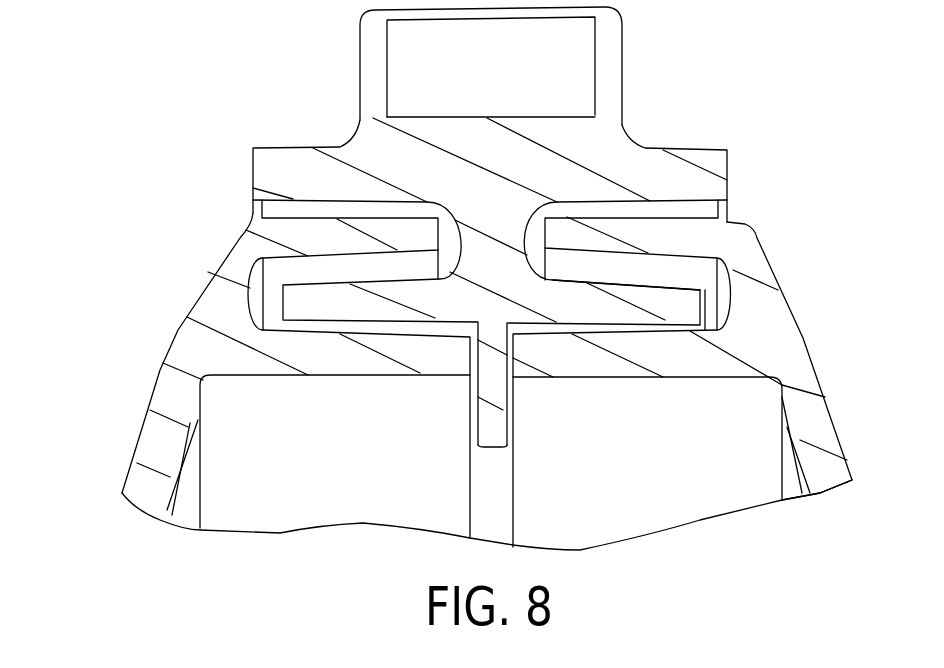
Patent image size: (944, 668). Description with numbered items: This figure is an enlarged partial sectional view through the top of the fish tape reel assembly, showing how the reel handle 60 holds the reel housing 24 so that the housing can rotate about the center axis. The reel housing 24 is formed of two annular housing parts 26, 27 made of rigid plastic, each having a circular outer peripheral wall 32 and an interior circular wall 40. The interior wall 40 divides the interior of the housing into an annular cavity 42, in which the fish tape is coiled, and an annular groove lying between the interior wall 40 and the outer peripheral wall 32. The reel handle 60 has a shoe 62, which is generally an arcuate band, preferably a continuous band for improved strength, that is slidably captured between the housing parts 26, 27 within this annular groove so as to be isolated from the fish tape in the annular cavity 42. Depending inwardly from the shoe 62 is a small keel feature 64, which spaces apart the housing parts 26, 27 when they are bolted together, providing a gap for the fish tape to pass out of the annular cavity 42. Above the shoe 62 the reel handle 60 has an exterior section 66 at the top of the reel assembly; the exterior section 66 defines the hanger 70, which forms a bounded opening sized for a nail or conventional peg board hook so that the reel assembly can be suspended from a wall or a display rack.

The hanger 70 is at (417, 65).
The exterior section 66 is at (677, 172).
The reel handle 60 is at (250, 173).
The outer peripheral wall 32 is at (337, 244).
The shoe 62 is at (673, 300).
The keel feature 64 is at (490, 437).
The interior circular wall 40 is at (352, 363).
The reel housing 24 is at (150, 392).
The housing part 27 is at (135, 450).
The annular cavity 42 is at (368, 505).
The housing part 26 is at (830, 492).